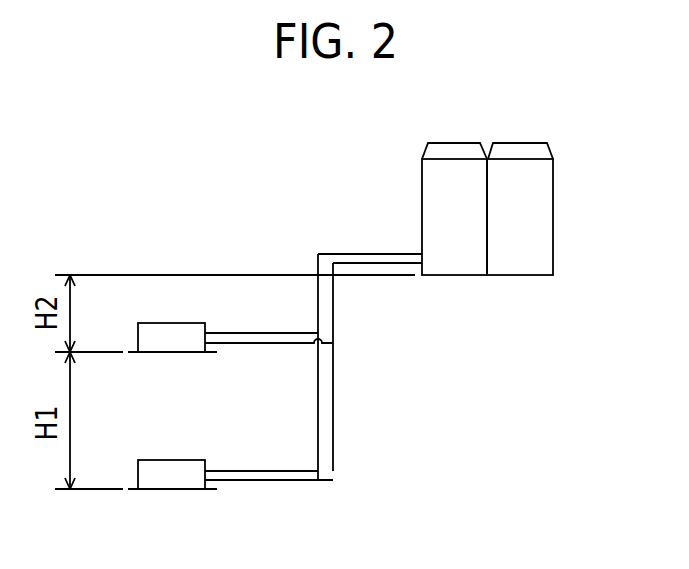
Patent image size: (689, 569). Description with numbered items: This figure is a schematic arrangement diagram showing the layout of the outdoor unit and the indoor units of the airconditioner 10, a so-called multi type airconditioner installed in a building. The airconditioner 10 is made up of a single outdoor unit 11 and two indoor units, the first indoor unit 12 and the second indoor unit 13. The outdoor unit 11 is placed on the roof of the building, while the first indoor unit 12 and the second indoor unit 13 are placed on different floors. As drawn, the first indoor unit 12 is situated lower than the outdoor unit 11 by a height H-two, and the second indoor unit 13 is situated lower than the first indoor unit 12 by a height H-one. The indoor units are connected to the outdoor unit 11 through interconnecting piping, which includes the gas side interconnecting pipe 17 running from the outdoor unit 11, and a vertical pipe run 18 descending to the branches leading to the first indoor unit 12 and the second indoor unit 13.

The airconditioner 10 is at (582, 118).
The outdoor unit 11 is at (452, 142).
The first indoor unit 12 is at (172, 354).
The second indoor unit 13 is at (172, 491).
The gas side interconnecting pipe 17 is at (347, 253).
The vertical pipe 18 is at (334, 390).